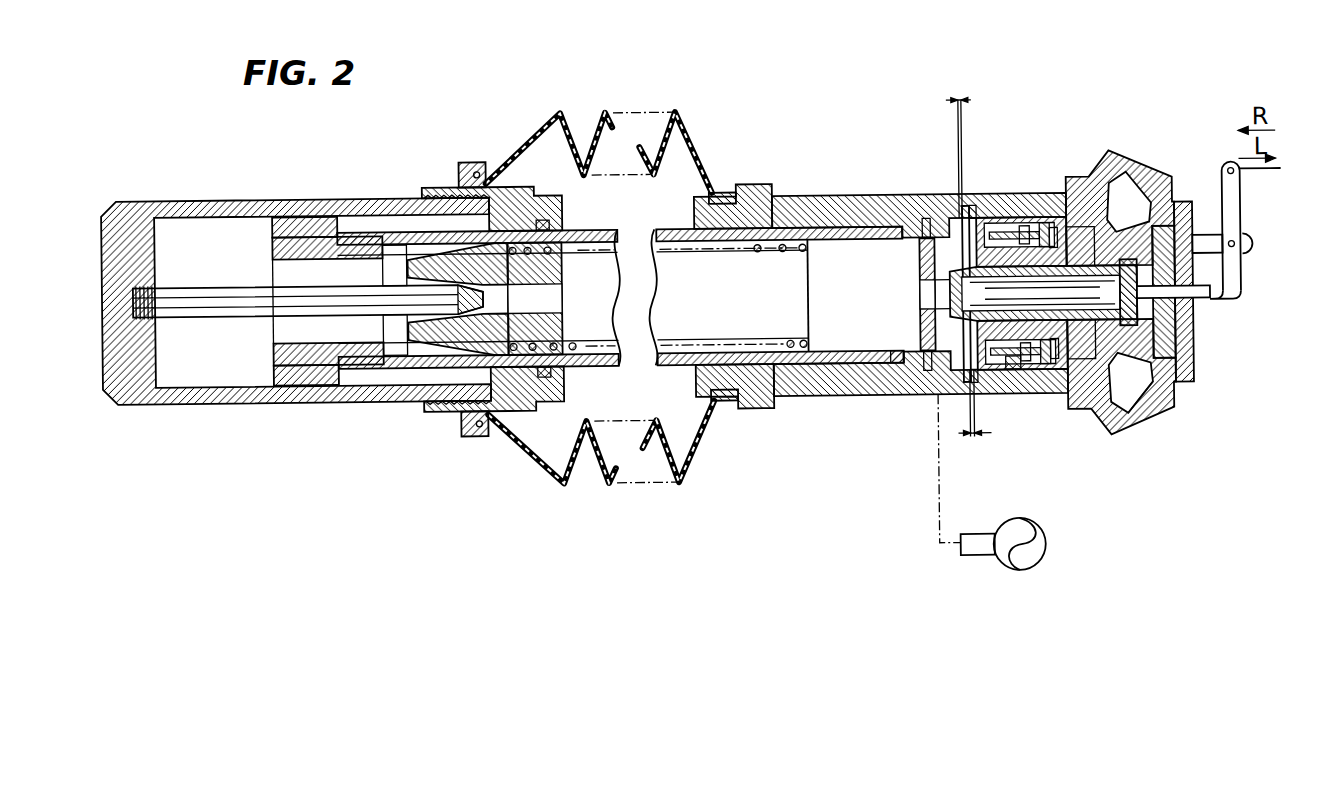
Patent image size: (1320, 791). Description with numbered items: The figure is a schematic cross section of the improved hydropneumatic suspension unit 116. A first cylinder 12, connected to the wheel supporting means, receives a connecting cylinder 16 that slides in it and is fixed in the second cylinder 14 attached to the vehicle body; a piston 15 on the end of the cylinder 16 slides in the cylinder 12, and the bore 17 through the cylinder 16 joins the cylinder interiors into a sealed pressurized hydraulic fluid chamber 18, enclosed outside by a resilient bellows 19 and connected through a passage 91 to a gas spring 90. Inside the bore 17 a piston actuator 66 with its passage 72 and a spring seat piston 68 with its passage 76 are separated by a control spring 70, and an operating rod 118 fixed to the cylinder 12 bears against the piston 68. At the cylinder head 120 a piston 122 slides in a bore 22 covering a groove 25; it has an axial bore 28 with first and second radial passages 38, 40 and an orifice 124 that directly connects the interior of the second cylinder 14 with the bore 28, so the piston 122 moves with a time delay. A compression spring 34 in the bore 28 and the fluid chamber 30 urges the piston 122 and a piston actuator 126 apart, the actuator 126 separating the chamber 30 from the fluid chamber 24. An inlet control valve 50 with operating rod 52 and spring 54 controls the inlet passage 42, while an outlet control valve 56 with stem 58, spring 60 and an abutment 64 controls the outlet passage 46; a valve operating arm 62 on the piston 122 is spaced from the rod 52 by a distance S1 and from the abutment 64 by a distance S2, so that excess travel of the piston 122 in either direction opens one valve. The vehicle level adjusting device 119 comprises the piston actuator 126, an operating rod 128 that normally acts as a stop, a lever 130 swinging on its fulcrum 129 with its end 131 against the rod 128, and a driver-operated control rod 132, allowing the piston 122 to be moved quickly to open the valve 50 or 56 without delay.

The first hollow body 12 is at (362, 199).
The second hollow body 14 is at (840, 198).
The piston 15 is at (290, 213).
The intermediate hollow body 16 is at (795, 229).
The cylindrical bore 17 is at (718, 244).
The pressurized hydraulic fluid chamber 18 is at (665, 303).
The resilient bellows 19 is at (682, 118).
The bore 22 is at (1010, 386).
The fluid chamber 24 is at (1172, 392).
The groove 25 is at (1053, 234).
The axial bore 28 is at (1207, 240).
The fluid chamber 30 is at (1117, 252).
The compression spring 34 is at (912, 212).
The first radial passage 38 is at (990, 227).
The second radial passage 40 is at (1067, 255).
The inlet passage 42 is at (1140, 422).
The outlet passage 46 is at (1127, 173).
The inlet control valve 50 is at (1013, 400).
The inlet valve operating rod 52 is at (975, 386).
The spring 54 is at (1025, 376).
The outlet control valve 56 is at (1030, 229).
The outlet valve operating rod 58 is at (968, 230).
The spring 60 is at (1040, 231).
The valve operating arm 62 is at (903, 372).
The abutment 64 is at (927, 225).
The piston actuator 66 is at (932, 300).
The spring seat 68 is at (508, 296).
The control spring 70 is at (790, 340).
The passage 72 is at (928, 326).
The passage 76 is at (508, 321).
The gas spring 90 is at (1044, 550).
The passage 91 is at (932, 392).
The hydropneumatic suspension unit 116 is at (760, 126).
The operating rod 118 is at (206, 283).
The vehicle level adjusting device 119 is at (1196, 378).
The cylinder head 120 is at (1104, 153).
The piston 122 is at (1087, 412).
The orifice 124 is at (917, 280).
The piston actuator 126 is at (1133, 418).
The operating rod 128 is at (1203, 301).
The fulcrum 129 is at (1234, 255).
The lever 130 is at (1227, 304).
The end 131 is at (1212, 302).
The control rod 132 is at (1260, 176).
The predetermined distance S1 is at (975, 416).
The predetermined distance S2 is at (958, 143).